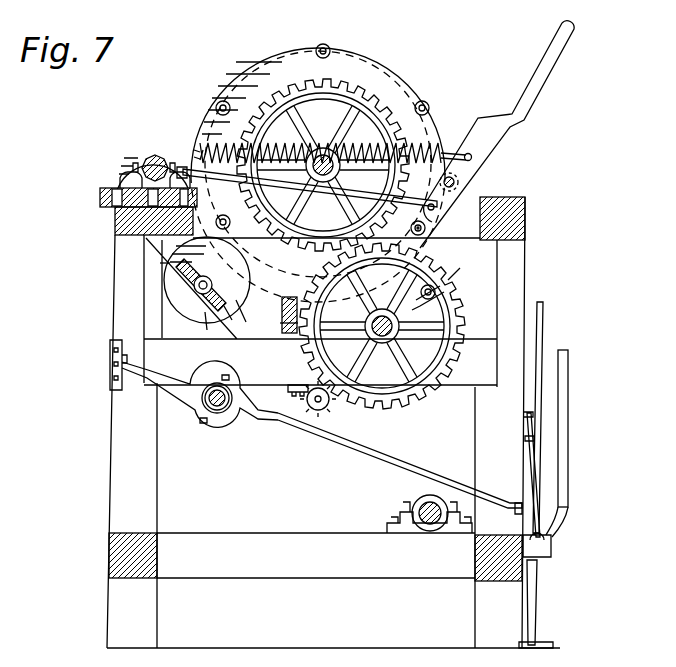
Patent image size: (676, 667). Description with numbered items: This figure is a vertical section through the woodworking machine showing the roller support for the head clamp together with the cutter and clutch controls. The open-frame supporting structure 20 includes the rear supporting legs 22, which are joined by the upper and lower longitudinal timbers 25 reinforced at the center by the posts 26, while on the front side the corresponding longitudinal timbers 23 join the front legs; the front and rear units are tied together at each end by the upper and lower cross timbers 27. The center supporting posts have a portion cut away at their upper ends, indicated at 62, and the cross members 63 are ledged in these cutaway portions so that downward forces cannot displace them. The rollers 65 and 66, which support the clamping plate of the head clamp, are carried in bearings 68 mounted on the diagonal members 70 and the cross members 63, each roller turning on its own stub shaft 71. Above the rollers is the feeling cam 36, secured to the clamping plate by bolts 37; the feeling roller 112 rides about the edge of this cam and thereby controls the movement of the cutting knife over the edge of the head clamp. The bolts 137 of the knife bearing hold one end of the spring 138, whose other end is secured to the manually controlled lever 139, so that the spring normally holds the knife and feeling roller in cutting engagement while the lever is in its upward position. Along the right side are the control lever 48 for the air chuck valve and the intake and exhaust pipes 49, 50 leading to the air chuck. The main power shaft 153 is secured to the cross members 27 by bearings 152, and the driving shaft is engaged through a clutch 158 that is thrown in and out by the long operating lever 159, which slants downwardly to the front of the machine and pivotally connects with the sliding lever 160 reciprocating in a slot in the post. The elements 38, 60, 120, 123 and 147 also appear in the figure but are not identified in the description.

The supporting structure 20 is at (522, 262).
The rear supporting legs 22 is at (126, 610).
The upper and lower longitudinal timbers 23 is at (512, 206).
The upper and lower longitudinal timbers 25 is at (134, 230).
The posts 26 is at (140, 475).
The upper and lower cross timbers 27 is at (308, 568).
The feeling cam 36 is at (266, 80).
The bolts 37 is at (323, 44).
The shaded portion 38 is at (218, 112).
The control lever 48 is at (572, 482).
The intake pipe 49 is at (526, 414).
The exhaust pipe 50 is at (526, 439).
The cam 60 is at (158, 268).
The cutaway portion 62 is at (158, 298).
The cross members 63 is at (540, 368).
The roller 65 is at (282, 304).
The roller 66 is at (480, 327).
The bearings 68 is at (296, 338).
The diagonal members 70 is at (196, 335).
The stub shafts 71 is at (505, 283).
The feeling roller 112 is at (118, 167).
The pivot 120 is at (462, 186).
The pin 123 is at (430, 230).
The bolts 137 is at (194, 162).
The spring 138 is at (448, 148).
The lever 139 is at (535, 85).
The gear wheel 147 is at (340, 231).
The bearings 152 is at (398, 514).
The main power shaft 153 is at (436, 526).
The clutch 158 is at (222, 414).
The operating lever 159 is at (350, 436).
The sliding lever 160 is at (516, 514).